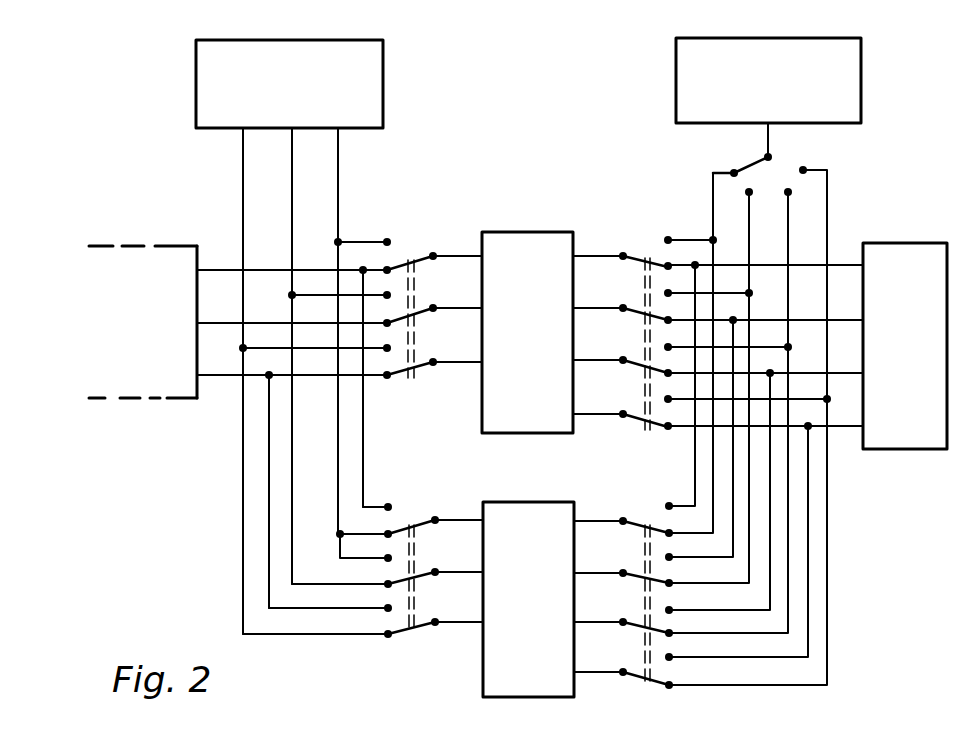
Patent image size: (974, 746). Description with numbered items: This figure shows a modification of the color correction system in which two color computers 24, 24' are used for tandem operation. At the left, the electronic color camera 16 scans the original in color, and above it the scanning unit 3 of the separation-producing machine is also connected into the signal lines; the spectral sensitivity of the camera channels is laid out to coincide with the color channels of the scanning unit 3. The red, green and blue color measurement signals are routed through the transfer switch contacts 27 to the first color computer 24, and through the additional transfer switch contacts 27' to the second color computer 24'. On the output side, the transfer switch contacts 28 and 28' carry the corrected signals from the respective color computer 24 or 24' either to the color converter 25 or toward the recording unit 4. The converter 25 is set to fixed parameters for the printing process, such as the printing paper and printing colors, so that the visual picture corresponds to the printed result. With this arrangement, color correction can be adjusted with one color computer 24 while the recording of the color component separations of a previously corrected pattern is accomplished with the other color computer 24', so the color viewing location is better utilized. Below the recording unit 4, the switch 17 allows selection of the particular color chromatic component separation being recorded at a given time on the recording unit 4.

The scanning unit 3 is at (365, 77).
The recording unit 4 is at (690, 70).
The electronic color camera 16 is at (160, 382).
The switch 17 is at (778, 168).
The color computer 24 is at (527, 304).
The color computer 24' is at (502, 600).
The color converter 25 is at (898, 243).
The transfer switch contacts 27 is at (410, 289).
The transfer switch contacts 27' is at (411, 557).
The transfer switch contacts 28 is at (645, 314).
The transfer switch contacts 28' is at (639, 582).